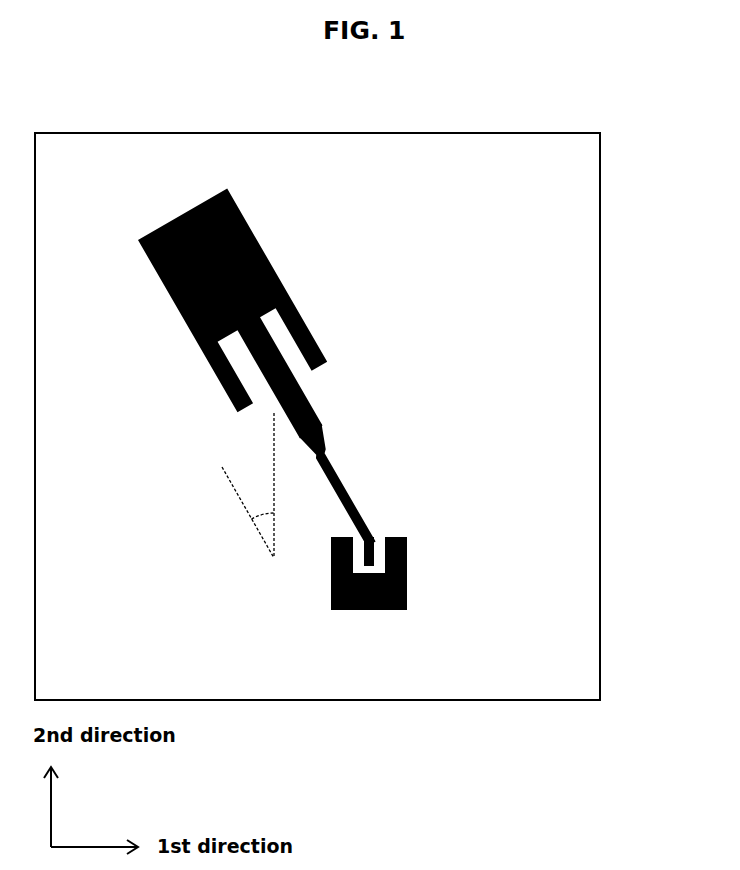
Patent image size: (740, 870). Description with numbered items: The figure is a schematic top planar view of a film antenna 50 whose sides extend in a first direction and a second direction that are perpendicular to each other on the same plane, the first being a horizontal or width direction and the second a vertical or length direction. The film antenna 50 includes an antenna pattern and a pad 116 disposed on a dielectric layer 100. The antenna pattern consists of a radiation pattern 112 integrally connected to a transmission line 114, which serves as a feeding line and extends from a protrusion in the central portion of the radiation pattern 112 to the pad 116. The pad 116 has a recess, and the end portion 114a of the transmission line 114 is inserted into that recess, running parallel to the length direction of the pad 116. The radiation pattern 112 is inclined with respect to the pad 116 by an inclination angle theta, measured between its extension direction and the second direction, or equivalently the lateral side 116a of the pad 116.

The film antenna 50 is at (67, 73).
The dielectric layer 100 is at (592, 217).
The radiation pattern 112 is at (190, 208).
The transmission line 114 is at (500, 495).
The end portion 114a is at (373, 552).
The pad 116 is at (407, 583).
The lateral side 116a is at (415, 600).